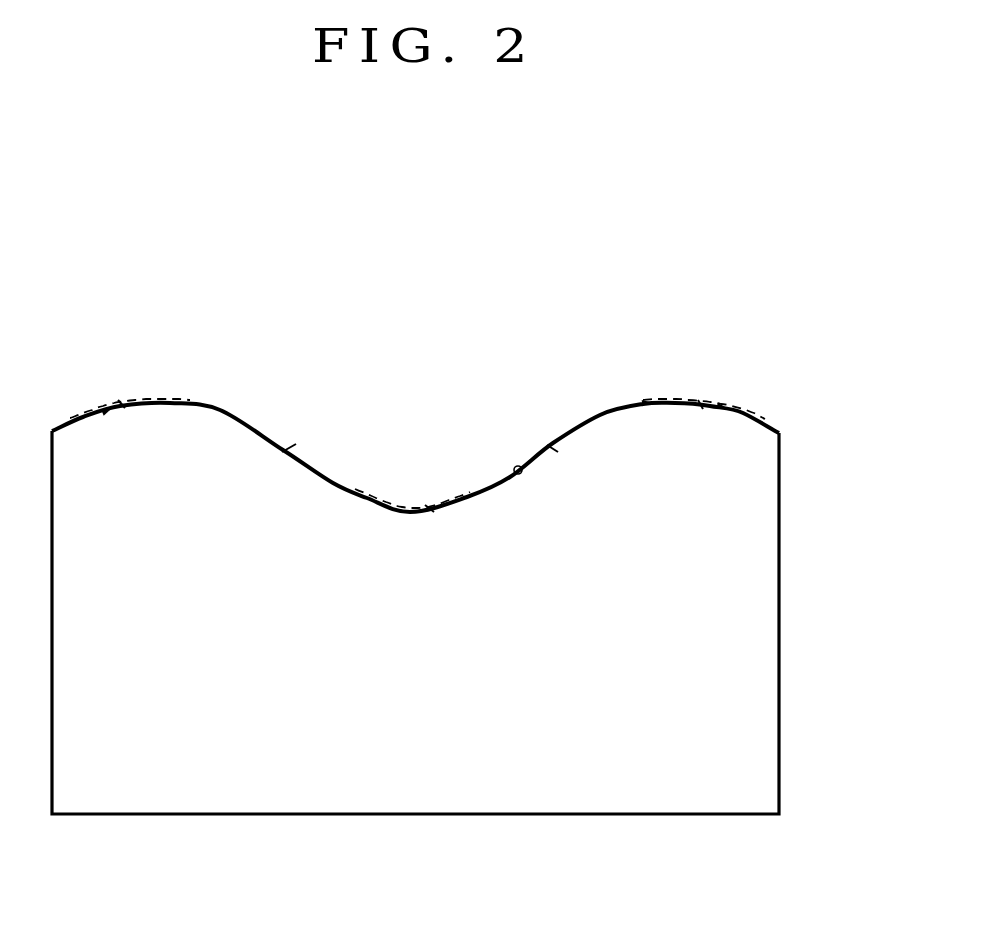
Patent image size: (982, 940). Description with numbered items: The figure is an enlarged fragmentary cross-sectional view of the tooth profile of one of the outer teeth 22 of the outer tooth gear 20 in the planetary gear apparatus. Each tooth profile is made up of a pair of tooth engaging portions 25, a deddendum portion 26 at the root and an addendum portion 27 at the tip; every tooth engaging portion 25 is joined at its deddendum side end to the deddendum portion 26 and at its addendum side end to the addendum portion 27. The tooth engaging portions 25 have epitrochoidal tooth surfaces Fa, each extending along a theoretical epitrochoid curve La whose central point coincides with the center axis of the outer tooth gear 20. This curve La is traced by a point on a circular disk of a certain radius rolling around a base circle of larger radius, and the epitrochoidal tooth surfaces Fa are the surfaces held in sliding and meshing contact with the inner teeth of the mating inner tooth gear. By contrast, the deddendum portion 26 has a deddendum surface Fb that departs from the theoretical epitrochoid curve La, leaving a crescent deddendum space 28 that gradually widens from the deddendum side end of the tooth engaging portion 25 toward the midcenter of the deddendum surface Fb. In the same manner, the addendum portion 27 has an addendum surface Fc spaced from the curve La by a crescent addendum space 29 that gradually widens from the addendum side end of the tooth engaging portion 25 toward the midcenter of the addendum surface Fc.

The outer tooth gear 20 is at (779, 578).
The outer teeth 22 is at (236, 391).
The tooth engaging portions 25 is at (289, 450).
The deddendum portion 26 is at (430, 520).
The addendum portion 27 is at (122, 403).
The crescent deddendum space 28 is at (478, 512).
The crescent addendum space 29 is at (150, 418).
The theoretical epitrochoid curve La is at (157, 398).
The epitrochoidal tooth surfaces Fa is at (303, 460).
The deddendum surface Fb is at (388, 512).
The addendum surface Fc is at (120, 405).